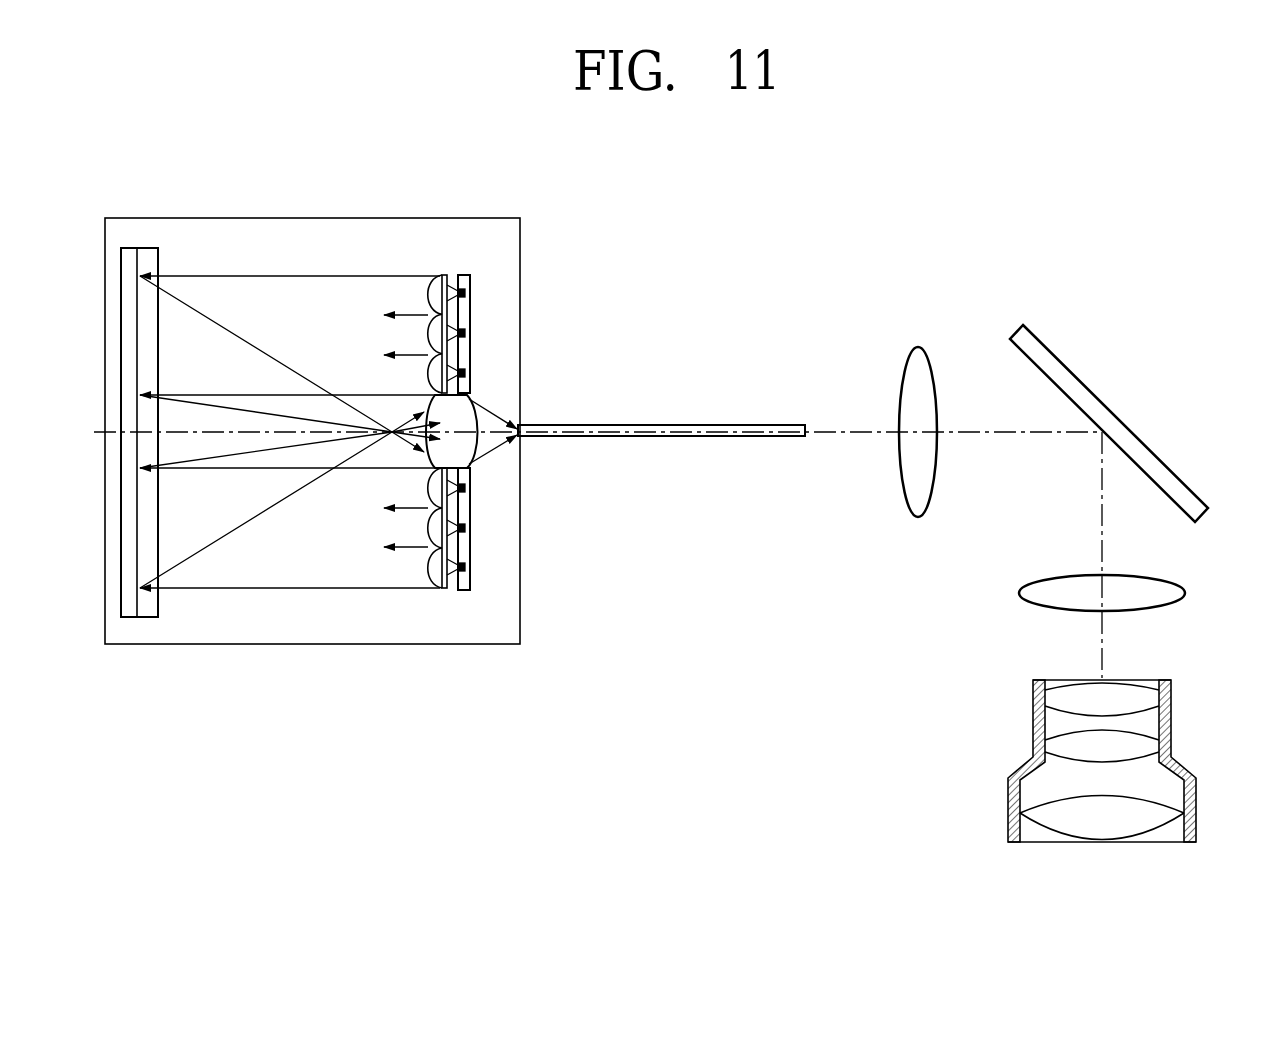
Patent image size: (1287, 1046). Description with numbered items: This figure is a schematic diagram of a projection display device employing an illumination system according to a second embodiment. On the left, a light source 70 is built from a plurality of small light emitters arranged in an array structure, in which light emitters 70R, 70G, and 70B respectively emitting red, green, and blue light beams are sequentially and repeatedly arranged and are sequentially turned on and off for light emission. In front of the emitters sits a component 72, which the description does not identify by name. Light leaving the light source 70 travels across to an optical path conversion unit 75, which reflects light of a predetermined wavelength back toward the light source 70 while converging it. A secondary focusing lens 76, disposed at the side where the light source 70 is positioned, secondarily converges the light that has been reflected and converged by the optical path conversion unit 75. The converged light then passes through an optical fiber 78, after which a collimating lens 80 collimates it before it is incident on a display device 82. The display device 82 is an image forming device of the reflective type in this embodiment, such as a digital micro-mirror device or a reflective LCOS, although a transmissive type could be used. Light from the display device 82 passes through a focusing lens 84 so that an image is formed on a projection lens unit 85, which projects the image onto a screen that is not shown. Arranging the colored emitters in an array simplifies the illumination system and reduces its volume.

The light source 70 is at (546, 380).
The red light emitter 70R is at (471, 299).
The green light emitter 70G is at (471, 338).
The blue light emitter 70B is at (471, 377).
The collimating lens array 72 is at (443, 273).
The optical path conversion unit 75 is at (174, 238).
The secondary focusing lens 76 is at (463, 450).
The optical fiber 78 is at (774, 432).
The collimating lens 80 is at (918, 358).
The display device 82 is at (1060, 372).
The focusing lens 84 is at (1186, 598).
The projection lens unit 85 is at (1196, 787).